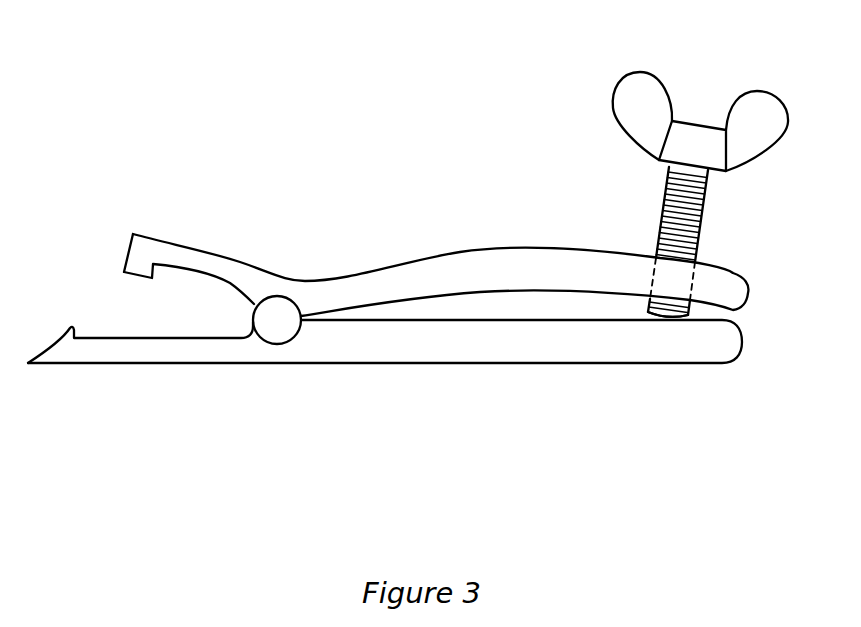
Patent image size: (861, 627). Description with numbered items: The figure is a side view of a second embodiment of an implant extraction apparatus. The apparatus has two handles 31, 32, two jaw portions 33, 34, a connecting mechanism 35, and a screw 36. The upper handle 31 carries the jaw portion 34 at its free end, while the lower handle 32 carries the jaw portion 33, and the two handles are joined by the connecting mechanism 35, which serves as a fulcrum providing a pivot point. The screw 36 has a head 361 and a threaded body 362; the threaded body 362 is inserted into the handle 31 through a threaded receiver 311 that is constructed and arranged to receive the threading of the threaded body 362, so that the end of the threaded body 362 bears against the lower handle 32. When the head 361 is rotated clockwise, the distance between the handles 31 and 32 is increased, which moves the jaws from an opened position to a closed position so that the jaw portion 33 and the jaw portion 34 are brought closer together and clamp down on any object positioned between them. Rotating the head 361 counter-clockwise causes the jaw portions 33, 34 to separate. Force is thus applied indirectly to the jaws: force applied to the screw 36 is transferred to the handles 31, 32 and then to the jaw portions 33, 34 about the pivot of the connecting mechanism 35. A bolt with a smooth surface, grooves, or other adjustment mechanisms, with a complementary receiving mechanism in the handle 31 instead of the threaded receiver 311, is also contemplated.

The handle 31 is at (427, 268).
The handle 32 is at (472, 355).
The jaw portion 33 is at (122, 355).
The jaw portion 34 is at (170, 254).
The connecting mechanism 35 is at (277, 313).
The screw 36 is at (707, 194).
The threaded receiver 311 is at (693, 258).
The head 361 is at (692, 129).
The threaded body 362 is at (677, 309).